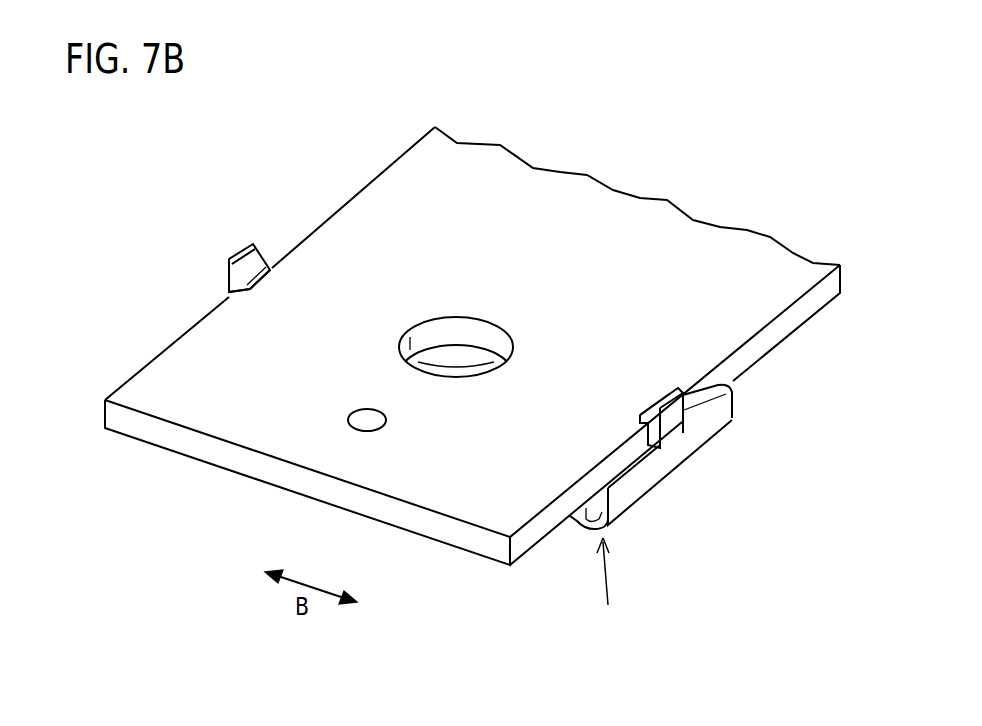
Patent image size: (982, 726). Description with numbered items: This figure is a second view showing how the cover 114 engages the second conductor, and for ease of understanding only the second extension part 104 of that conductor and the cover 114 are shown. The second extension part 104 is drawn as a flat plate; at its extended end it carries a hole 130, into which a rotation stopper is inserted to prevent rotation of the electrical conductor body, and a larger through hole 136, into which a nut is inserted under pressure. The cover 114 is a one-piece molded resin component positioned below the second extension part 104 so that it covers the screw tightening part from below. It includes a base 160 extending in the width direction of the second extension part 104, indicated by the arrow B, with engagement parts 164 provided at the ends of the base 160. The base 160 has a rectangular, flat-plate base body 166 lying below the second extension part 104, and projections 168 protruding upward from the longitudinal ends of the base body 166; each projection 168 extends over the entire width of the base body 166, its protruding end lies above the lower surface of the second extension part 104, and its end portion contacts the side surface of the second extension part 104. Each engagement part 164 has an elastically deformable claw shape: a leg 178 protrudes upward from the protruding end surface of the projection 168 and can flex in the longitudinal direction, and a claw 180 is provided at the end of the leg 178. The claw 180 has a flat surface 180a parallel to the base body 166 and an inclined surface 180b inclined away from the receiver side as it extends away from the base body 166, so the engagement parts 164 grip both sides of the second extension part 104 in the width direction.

The second extension part 104 is at (557, 200).
The cover 114 is at (613, 587).
The hole 130 is at (366, 415).
The through hole 136 is at (455, 332).
The base 160 is at (655, 491).
The engagement part 164 is at (250, 246).
The base body 166 is at (582, 525).
The projection 168 is at (720, 420).
The leg 178 is at (670, 432).
The claw 180 is at (228, 270).
The flat surface 180a is at (246, 290).
The inclined surface 180b is at (262, 276).